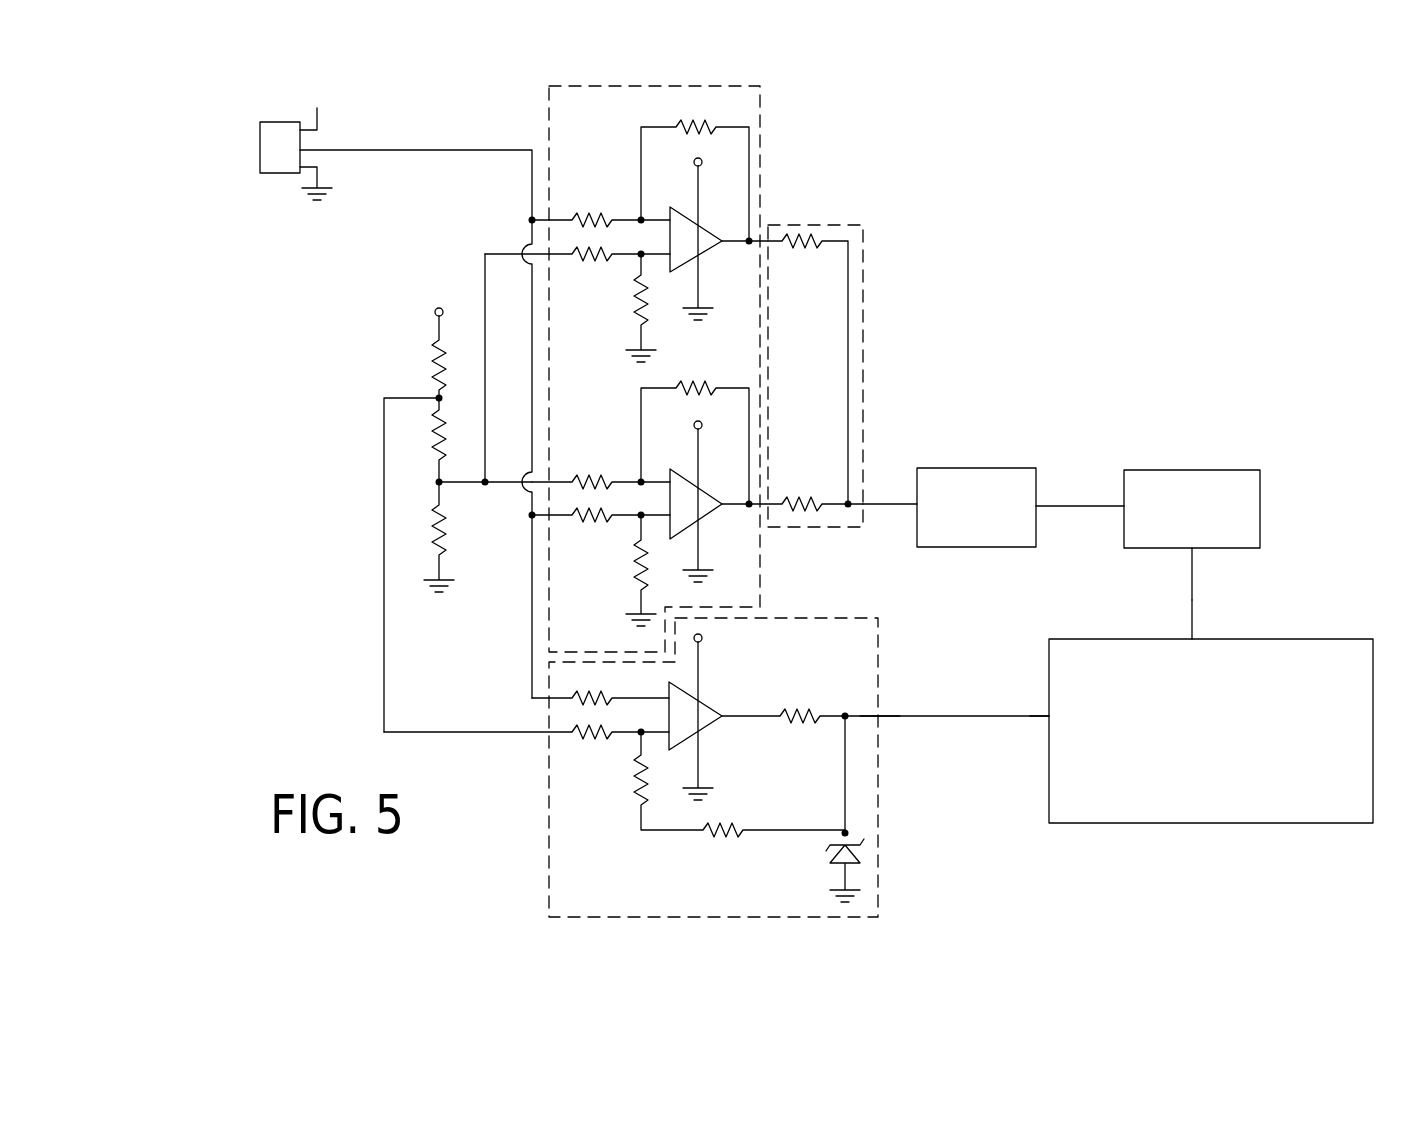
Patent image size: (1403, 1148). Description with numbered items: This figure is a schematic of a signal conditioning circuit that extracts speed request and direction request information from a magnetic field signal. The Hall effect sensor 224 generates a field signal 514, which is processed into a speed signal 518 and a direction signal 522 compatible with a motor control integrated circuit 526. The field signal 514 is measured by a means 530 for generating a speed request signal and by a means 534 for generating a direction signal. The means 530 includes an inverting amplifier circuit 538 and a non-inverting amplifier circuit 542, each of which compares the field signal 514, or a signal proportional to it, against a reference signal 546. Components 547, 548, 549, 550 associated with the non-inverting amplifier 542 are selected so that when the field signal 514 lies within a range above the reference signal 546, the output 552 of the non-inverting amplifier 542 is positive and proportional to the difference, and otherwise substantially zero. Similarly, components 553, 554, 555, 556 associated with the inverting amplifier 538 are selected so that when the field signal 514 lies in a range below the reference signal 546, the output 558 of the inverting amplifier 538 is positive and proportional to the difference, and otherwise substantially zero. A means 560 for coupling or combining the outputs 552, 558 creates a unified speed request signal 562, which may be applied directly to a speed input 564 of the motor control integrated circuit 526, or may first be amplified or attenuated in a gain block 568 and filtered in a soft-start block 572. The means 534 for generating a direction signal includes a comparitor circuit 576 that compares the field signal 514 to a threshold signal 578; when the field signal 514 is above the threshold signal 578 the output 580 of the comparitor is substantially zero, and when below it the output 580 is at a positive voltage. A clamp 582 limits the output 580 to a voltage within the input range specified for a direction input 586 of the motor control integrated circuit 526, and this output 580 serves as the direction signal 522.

The Hall effect sensor 224 is at (286, 173).
The field signal 514 is at (357, 150).
The means for generating a speed request signal 530 is at (790, 168).
The inverting amplifier circuit 538 is at (618, 172).
The component associated with the inverting amplifier 553 is at (600, 213).
The component associated with the inverting amplifier 554 is at (598, 258).
The component associated with the inverting amplifier 555 is at (636, 304).
The component associated with the inverting amplifier 556 is at (697, 120).
The output of the inverting amplifier 558 is at (738, 238).
The means for coupling or combining the outputs 560 is at (866, 270).
The non-inverting amplifier circuit 542 is at (627, 453).
The component associated with the non-inverting amplifier 547 is at (600, 478).
The component associated with the non-inverting amplifier 548 is at (600, 518).
The component associated with the non-inverting amplifier 549 is at (636, 565).
The component associated with the non-inverting amplifier 550 is at (678, 382).
The output of the non-inverting amplifier 552 is at (750, 507).
The unified speed request signal 562 is at (892, 504).
The gain block 568 is at (980, 468).
The soft-start block 572 is at (1186, 470).
The speed signal 518 is at (1193, 582).
The speed input 564 is at (1193, 637).
The means for generating a direction signal 534 is at (838, 616).
The comparitor circuit 576 is at (718, 698).
The direction signal 522 is at (945, 716).
The output of the comparitor 580 is at (900, 717).
The direction input 586 is at (1047, 720).
The motor control integrated circuit 526 is at (1190, 778).
The reference signal 546 is at (470, 483).
The threshold signal 578 is at (405, 397).
The clamp 582 is at (848, 875).